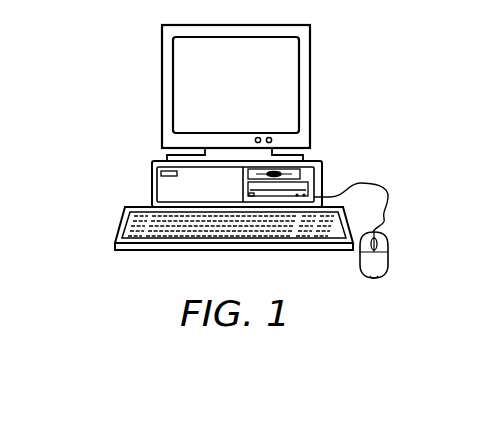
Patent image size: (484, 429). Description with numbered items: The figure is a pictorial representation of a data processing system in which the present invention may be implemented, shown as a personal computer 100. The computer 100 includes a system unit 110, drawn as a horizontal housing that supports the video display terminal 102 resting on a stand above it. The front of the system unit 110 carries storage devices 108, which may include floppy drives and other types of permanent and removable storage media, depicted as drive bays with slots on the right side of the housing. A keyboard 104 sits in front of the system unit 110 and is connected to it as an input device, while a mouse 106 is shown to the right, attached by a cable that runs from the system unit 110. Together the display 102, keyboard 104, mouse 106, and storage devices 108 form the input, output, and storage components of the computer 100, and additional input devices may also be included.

The computer 100 is at (102, 80).
The video display terminal 102 is at (311, 87).
The keyboard 104 is at (140, 250).
The mouse 106 is at (373, 280).
The storage devices 108 is at (314, 176).
The system unit 110 is at (151, 183).